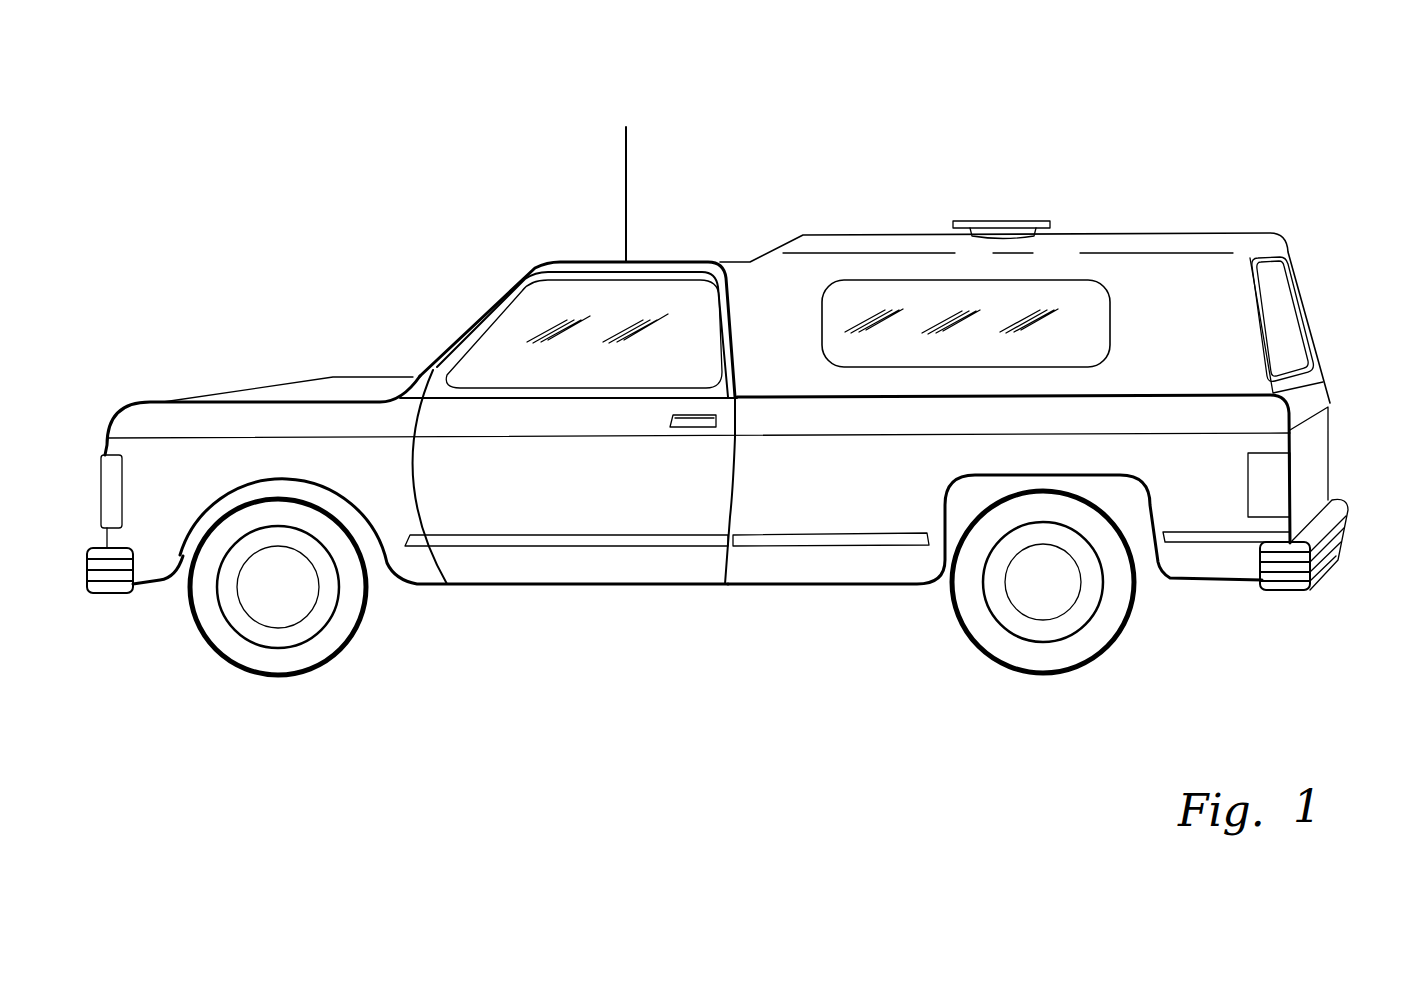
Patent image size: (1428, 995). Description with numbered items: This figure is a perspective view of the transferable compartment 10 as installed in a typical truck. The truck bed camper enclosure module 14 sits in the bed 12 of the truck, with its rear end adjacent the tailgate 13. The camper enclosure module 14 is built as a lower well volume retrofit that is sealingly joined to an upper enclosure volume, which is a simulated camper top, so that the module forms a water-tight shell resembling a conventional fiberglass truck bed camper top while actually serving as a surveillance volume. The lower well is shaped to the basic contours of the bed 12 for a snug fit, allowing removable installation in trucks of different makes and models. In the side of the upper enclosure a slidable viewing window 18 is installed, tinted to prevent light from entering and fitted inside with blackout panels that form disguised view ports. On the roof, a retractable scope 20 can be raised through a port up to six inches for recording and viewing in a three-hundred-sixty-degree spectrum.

The transferable compartment 10 is at (1226, 185).
The bed 12 is at (876, 464).
The tailgate 13 is at (1313, 450).
The camper enclosure module 14 is at (857, 245).
The slidable viewing windows 18 is at (1082, 297).
The retractable scope 20 is at (1003, 218).